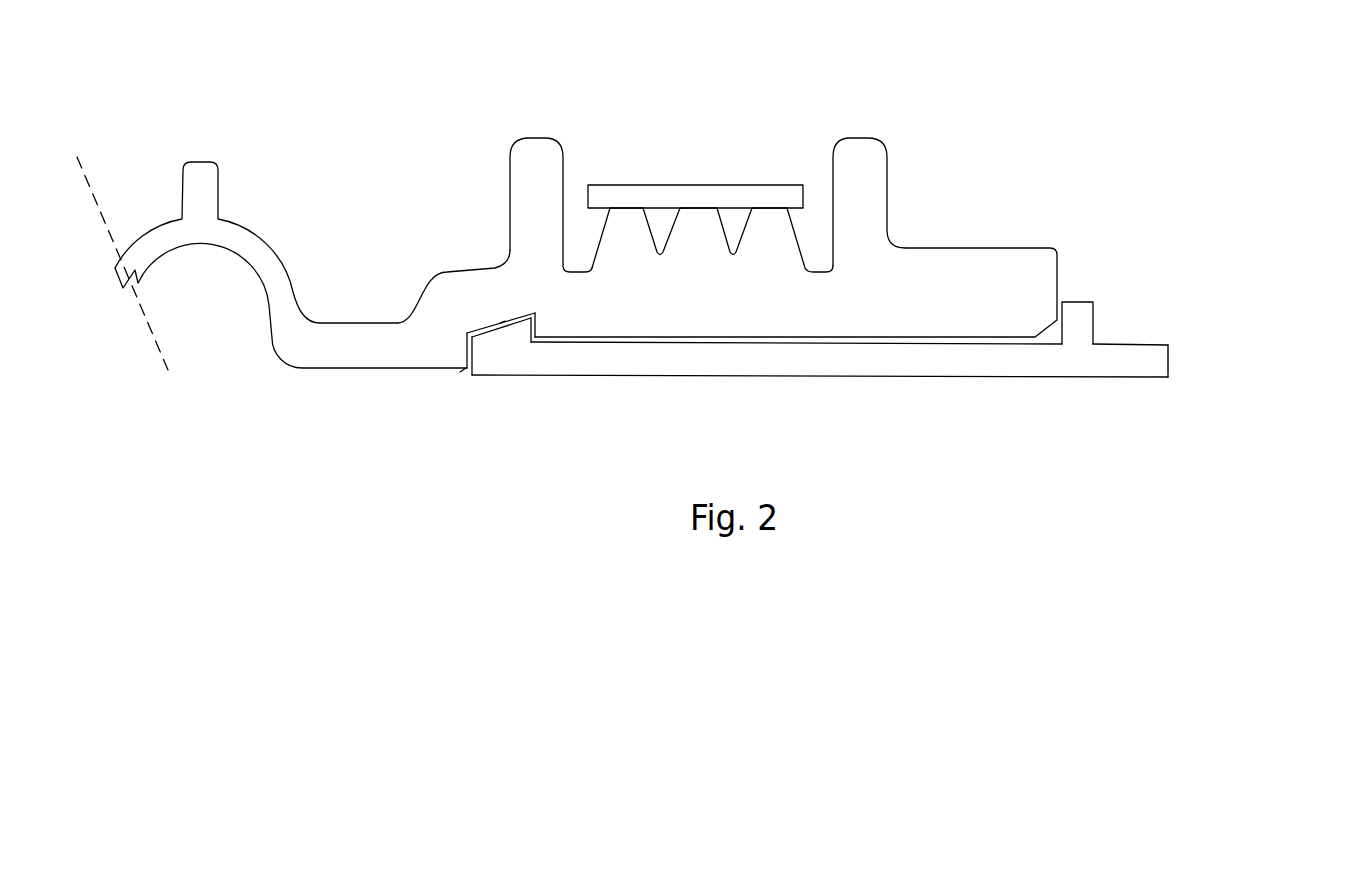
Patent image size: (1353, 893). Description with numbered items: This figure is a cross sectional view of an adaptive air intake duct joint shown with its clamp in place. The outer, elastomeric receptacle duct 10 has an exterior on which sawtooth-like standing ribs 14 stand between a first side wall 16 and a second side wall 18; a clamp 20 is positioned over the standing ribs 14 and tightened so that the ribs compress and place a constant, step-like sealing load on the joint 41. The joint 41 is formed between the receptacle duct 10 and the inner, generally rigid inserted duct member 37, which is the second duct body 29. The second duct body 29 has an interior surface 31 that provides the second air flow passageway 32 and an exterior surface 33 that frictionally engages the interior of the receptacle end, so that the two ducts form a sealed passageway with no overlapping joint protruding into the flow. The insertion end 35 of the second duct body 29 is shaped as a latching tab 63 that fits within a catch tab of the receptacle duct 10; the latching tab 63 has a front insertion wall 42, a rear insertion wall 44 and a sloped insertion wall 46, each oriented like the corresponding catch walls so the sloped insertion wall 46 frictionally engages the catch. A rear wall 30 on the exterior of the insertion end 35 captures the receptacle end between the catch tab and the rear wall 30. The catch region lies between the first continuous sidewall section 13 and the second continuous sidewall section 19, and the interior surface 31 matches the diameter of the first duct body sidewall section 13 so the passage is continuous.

The receptacle duct 10 is at (970, 242).
The first continuous sidewall section 13 is at (337, 368).
The standing ribs 14 is at (627, 208).
The first side wall 16 is at (890, 140).
The second side wall 18 is at (565, 138).
The second continuous sidewall section 19 is at (122, 237).
The clamp 20 is at (733, 180).
The second duct body 29 is at (1173, 362).
The rear wall 30 is at (1100, 302).
The interior surface of second duct body 31 is at (1123, 380).
The second air flow passageway 32 is at (1218, 485).
The exterior surface of second duct body 33 is at (1162, 342).
The insertion end 35 is at (462, 382).
The second end 37 is at (1170, 377).
The joint 41 is at (990, 342).
The front insertion wall 42 is at (473, 353).
The rear insertion wall 44 is at (537, 343).
The sloped insertion wall 46 is at (500, 335).
The latching tab 63 is at (497, 320).